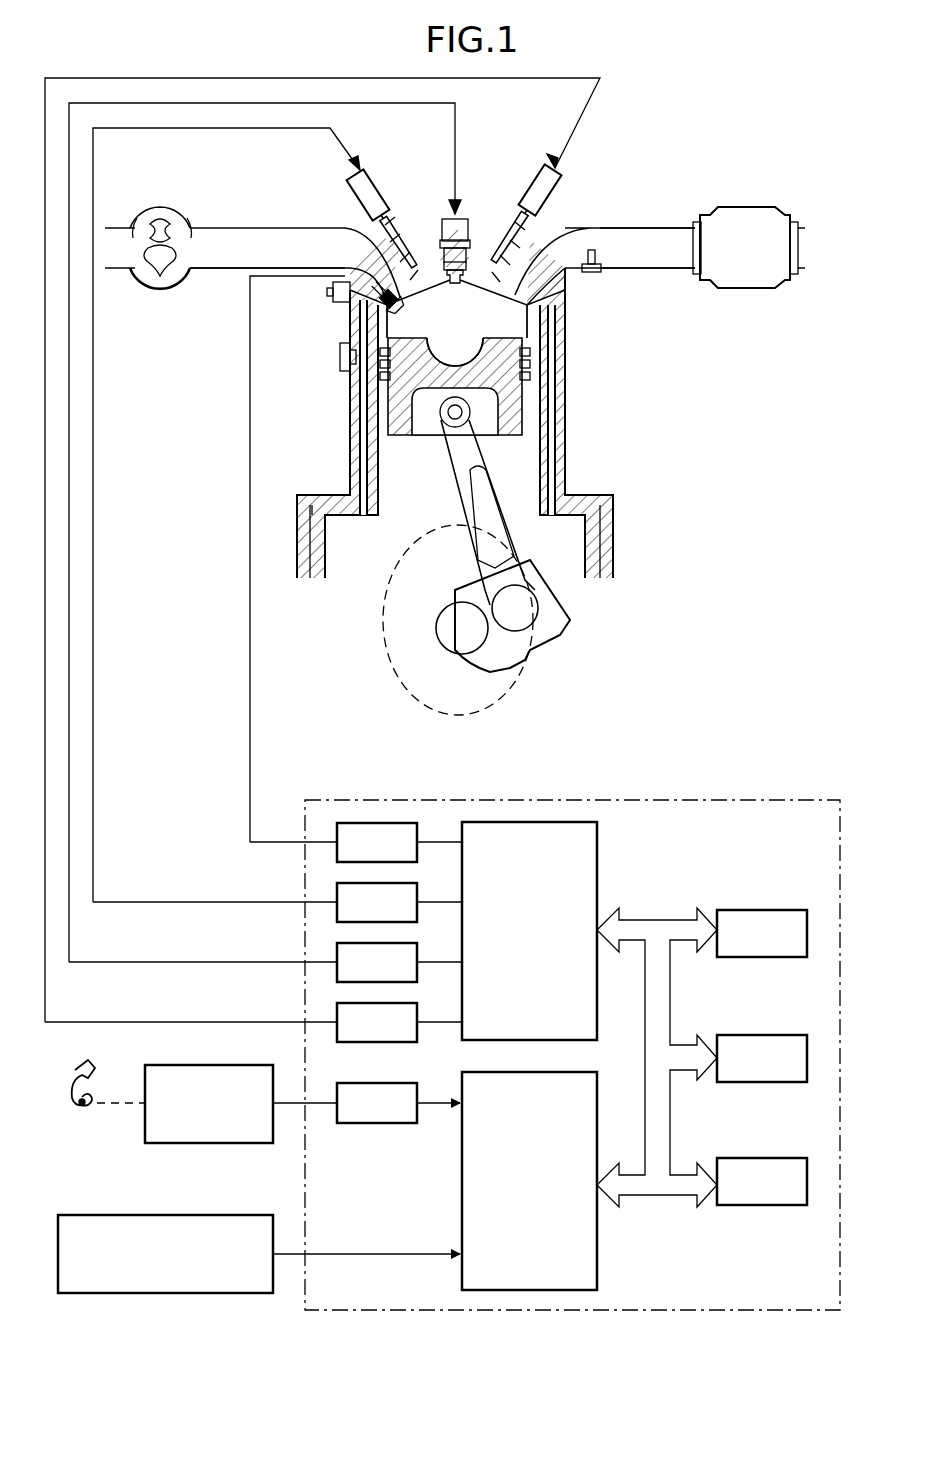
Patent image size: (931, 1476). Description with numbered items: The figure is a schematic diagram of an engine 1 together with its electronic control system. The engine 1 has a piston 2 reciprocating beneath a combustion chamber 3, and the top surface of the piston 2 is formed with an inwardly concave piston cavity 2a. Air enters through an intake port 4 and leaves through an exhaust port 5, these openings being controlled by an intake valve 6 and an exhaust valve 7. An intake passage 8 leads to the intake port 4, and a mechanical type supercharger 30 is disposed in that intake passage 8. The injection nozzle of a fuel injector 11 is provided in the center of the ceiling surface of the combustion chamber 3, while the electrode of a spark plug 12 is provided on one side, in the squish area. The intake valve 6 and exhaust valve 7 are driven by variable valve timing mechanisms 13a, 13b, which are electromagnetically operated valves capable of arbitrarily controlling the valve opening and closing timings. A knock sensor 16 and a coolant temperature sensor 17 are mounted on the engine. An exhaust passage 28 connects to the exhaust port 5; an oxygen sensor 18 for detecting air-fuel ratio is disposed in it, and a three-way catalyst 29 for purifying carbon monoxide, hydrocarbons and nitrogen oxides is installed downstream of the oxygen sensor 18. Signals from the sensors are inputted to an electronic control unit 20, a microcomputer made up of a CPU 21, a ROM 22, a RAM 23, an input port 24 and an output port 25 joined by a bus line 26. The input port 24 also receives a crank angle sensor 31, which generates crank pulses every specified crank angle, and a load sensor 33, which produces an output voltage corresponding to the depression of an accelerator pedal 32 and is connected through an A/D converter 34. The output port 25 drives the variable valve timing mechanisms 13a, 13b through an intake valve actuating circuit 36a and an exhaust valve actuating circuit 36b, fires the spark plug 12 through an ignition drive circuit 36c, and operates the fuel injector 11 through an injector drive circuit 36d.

The engine 1 is at (571, 393).
The piston 2 is at (397, 440).
The piston cavity 2a is at (456, 352).
The combustion chamber 3 is at (540, 339).
The intake port 4 is at (304, 232).
The exhaust port 5 is at (590, 232).
The intake valve 6 is at (384, 239).
The exhaust valve 7 is at (506, 222).
The intake passage 8 is at (221, 272).
The fuel injector 11 is at (466, 217).
The spark plug 12 is at (370, 309).
The variable valve timing mechanism 13a is at (381, 182).
The variable valve timing mechanism 13b is at (537, 182).
The knock sensor 16 is at (328, 294).
The coolant temperature sensor 17 is at (340, 352).
The oxygen sensor 18 is at (590, 275).
The electronic control unit 20 is at (850, 878).
The CPU 21 is at (766, 1155).
The ROM 22 is at (766, 907).
The RAM 23 is at (766, 1032).
The input port 24 is at (600, 1245).
The output port 25 is at (600, 830).
The bus line 26 is at (664, 920).
The exhaust passage 28 is at (644, 227).
The three-way catalyst 29 is at (742, 292).
The supercharger 30 is at (164, 206).
The crank angle sensor 31 is at (94, 1214).
The accelerator pedal 32 is at (90, 1060).
The load sensor 33 is at (208, 1145).
The A/D converter 34 is at (378, 1125).
The intake valve actuating circuit 36a is at (277, 525).
The exhaust valve actuating circuit 36b is at (322, 560).
The ignition drive circuit 36c is at (356, 569).
The injector drive circuit 36d is at (265, 542).